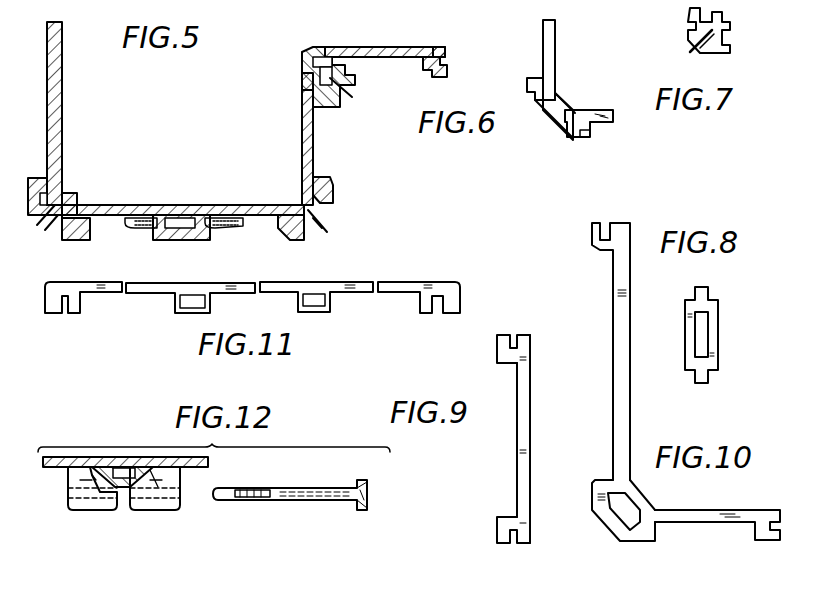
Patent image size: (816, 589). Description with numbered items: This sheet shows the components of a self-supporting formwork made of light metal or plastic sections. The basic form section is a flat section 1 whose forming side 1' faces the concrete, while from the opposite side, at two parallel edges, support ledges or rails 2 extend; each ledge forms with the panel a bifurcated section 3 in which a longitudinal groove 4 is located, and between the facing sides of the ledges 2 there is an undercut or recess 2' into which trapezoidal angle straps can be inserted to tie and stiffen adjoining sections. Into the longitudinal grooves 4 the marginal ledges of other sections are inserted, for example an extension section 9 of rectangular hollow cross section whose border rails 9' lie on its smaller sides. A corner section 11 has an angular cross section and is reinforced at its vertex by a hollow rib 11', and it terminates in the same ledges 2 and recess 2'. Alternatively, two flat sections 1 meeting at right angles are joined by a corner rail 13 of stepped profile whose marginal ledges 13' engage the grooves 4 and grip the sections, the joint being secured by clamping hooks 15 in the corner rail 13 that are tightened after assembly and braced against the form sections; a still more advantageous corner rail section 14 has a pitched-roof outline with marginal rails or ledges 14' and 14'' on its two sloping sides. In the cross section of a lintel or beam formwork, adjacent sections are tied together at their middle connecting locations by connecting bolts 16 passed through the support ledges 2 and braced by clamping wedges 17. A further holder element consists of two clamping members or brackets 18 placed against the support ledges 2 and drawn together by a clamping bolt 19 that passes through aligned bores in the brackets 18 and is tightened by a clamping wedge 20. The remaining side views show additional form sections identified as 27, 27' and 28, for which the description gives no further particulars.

In FIG. 5, the flat section 1 is at (237, 131).
In FIG. 6, the flat section 1 is at (562, 60).
In FIG. 9, the flat section 1 is at (536, 439).
In FIG. 12, the flat section 1 is at (120, 479).
In FIG. 5, the forming side 1' is at (206, 187).
In FIG. 5, the support ledges or rails 2 is at (182, 249).
In FIG. 9, the support ledges or rails 2 is at (495, 440).
In FIG. 10, the support ledges or rails 2 is at (718, 541).
In FIG. 12, the support ledges or rails 2 is at (124, 503).
In FIG. 9, the undercut or recess 2' is at (490, 441).
In FIG. 10, the undercut or recess 2' is at (742, 553).
In FIG. 9, the bifurcated section 3 is at (519, 322).
In FIG. 11, the bifurcated section 3 is at (63, 317).
In FIG. 5, the longitudinal groove 4 is at (50, 200).
In FIG. 9, the longitudinal groove 4 is at (521, 333).
In FIG. 8, the extension section 9 is at (711, 335).
In FIG. 8, the border rails 9' is at (725, 329).
In FIG. 10, the corner section 11 is at (604, 351).
In FIG. 10, the hollow rib 11' is at (643, 519).
In FIG. 5, the corner rail 13 is at (59, 240).
In FIG. 7, the corner rail 13 is at (690, 30).
In FIG. 7, the marginal ledges 13' is at (670, 17).
In FIG. 6, the corner rail section 14 is at (545, 111).
In FIG. 6, the marginal rails or ledges 14' is at (546, 116).
In FIG. 6, the marginal rails or ledges 14'' is at (589, 102).
In FIG. 5, the clamping hooks 15 is at (58, 216).
In FIG. 7, the clamping hooks 15 is at (696, 54).
In FIG. 5, the connecting bolts 16 is at (240, 226).
In FIG. 5, the clamping wedges 17 is at (127, 230).
In FIG. 12, the clamping members or brackets 18 is at (133, 508).
In FIG. 12, the clamping bolt 19 is at (320, 502).
In FIG. 12, the clamping wedge 20 is at (255, 489).
In FIG. 11, the strip 27 is at (422, 283).
In FIG. 11, the strip end 27' is at (408, 268).
In FIG. 11, the strip box 28 is at (188, 310).